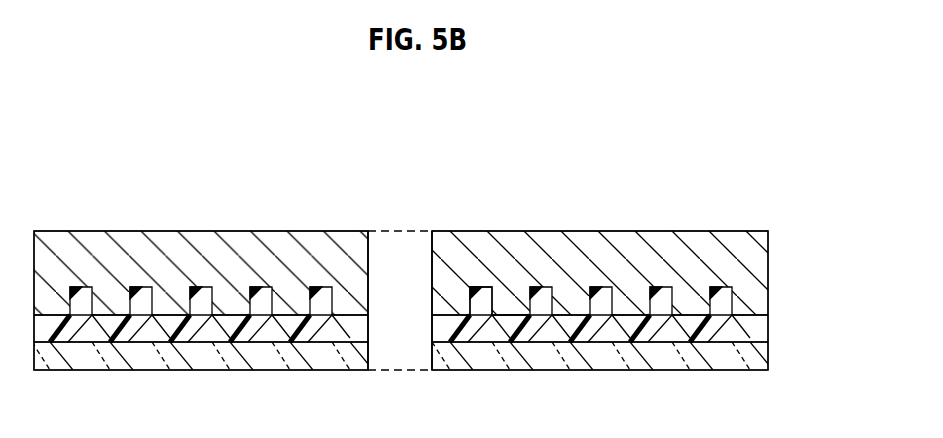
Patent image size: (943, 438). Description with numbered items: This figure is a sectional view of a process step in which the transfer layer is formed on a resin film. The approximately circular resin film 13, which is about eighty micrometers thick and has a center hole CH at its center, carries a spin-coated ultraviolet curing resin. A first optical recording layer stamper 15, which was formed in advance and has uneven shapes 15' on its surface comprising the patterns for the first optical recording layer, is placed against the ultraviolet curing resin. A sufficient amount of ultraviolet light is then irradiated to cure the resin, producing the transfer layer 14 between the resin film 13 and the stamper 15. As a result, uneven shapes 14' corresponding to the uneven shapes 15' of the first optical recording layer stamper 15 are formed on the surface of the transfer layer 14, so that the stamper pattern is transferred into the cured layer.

The resin film 13 is at (768, 365).
The transfer layer 14 is at (433, 320).
The uneven shapes 14' is at (479, 355).
The first optical recording layer stamper 15 is at (433, 273).
The uneven shapes 15' is at (512, 244).
The center hole CH is at (432, 302).